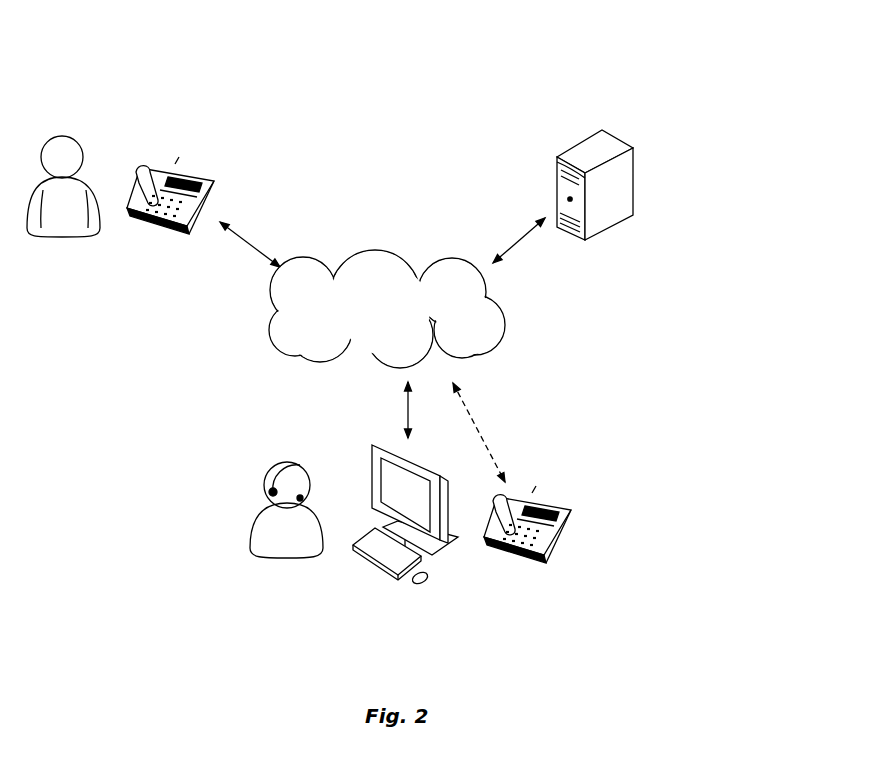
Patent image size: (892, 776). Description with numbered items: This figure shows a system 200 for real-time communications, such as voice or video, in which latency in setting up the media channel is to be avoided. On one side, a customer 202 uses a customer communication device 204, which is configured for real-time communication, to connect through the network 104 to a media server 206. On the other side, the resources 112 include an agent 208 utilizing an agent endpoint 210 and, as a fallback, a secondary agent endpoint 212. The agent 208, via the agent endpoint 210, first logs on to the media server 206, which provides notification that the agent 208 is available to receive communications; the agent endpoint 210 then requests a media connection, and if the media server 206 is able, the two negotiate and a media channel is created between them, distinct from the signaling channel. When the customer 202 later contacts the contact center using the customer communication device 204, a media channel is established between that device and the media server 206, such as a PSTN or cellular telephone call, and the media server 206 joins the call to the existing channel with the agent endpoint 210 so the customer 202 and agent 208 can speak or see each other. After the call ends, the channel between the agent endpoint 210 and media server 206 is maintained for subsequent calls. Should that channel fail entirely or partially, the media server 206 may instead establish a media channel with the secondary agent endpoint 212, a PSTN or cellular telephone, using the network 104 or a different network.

The system 200 is at (777, 88).
The customer 202 is at (90, 180).
The customer communication device 204 is at (220, 183).
The network 104 is at (407, 252).
The media server 206 is at (637, 167).
The agent 208 is at (290, 557).
The agent endpoint 210 is at (443, 548).
The secondary agent endpoint 212 is at (552, 548).
The resources 112 is at (605, 467).